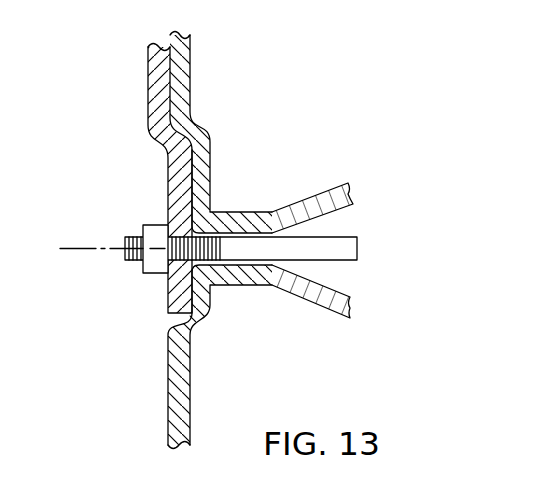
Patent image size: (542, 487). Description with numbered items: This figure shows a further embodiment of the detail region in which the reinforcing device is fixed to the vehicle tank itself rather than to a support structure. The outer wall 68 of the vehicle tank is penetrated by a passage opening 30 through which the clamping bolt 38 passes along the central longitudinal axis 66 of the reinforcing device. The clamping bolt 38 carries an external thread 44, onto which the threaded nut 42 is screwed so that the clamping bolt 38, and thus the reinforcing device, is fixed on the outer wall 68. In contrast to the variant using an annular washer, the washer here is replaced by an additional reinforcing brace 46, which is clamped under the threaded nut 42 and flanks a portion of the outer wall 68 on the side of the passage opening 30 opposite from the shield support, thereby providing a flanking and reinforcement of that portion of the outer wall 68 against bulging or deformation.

The passage opening 30 is at (338, 223).
The clamping bolt 38 is at (353, 249).
The threaded nut 42 is at (231, 233).
The external thread 44 is at (125, 260).
The reinforcing brace 46 is at (157, 110).
The central longitudinal axis 66 is at (70, 252).
The outer wall 68 is at (180, 78).